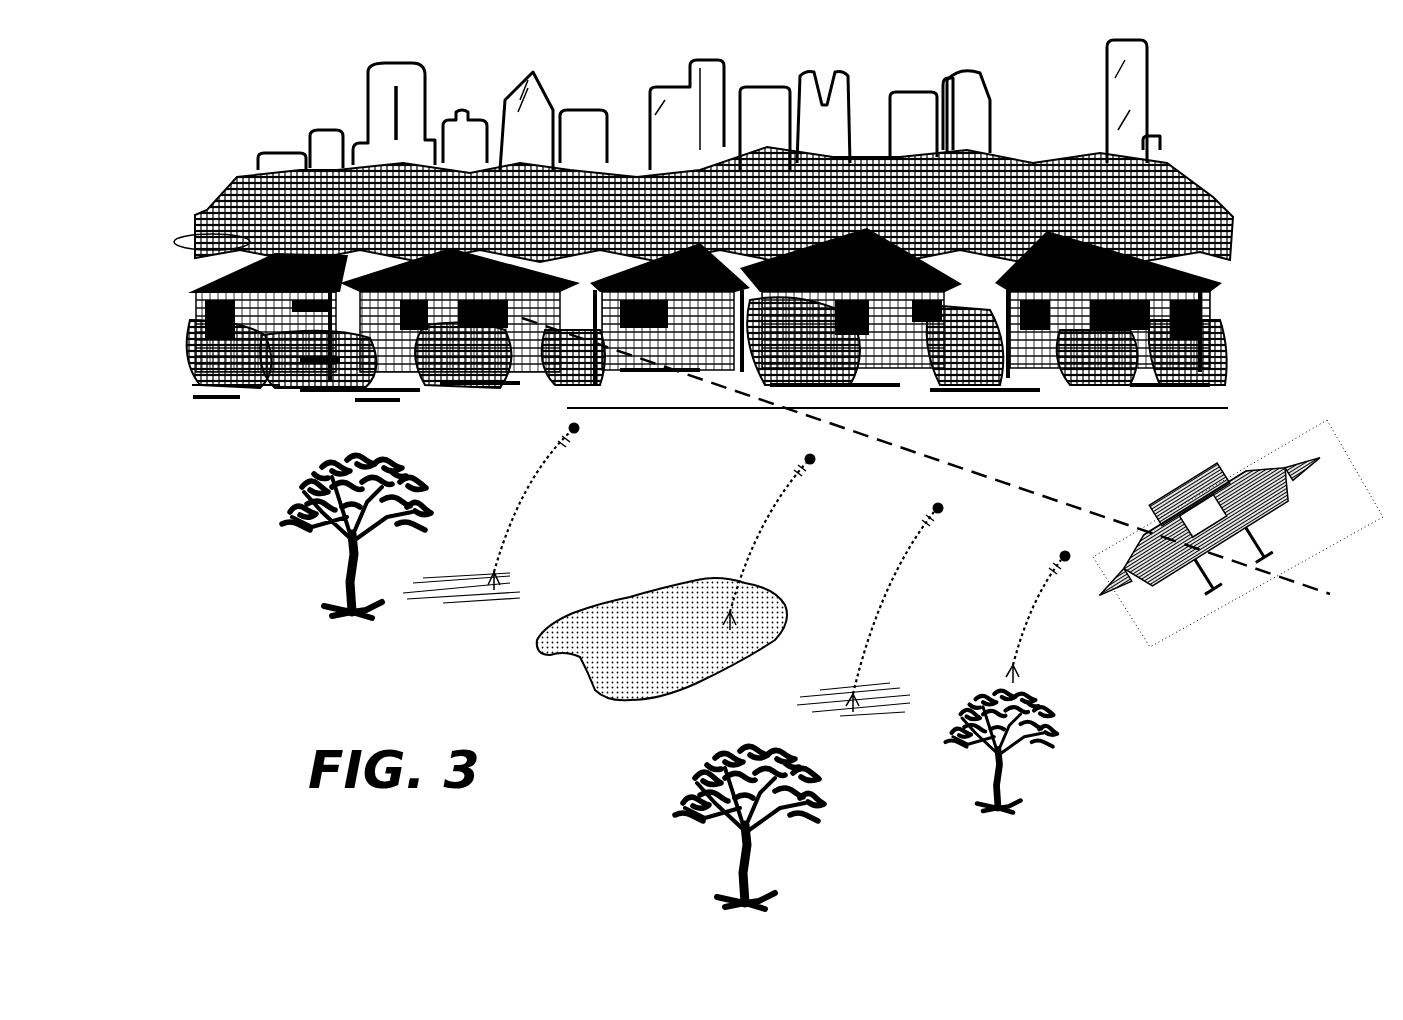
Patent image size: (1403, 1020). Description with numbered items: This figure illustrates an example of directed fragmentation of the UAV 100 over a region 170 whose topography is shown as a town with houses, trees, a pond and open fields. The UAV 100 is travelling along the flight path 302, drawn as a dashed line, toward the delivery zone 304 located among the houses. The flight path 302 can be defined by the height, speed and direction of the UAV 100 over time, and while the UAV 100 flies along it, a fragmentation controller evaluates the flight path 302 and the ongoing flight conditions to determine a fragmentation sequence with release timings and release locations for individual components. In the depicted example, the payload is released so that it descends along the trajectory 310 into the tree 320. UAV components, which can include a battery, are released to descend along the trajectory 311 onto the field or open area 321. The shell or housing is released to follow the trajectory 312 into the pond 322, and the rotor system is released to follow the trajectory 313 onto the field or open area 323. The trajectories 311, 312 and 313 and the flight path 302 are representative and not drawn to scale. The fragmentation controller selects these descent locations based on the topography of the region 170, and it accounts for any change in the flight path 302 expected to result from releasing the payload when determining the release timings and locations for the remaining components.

The region 170 is at (248, 78).
The delivery zone 304 is at (196, 252).
The flight path 302 is at (1078, 497).
The UAV 100 is at (1290, 500).
The trajectory 310 is at (1050, 592).
The trajectory 311 is at (916, 555).
The trajectory 312 is at (790, 500).
The trajectory 313 is at (552, 468).
The tree 320 is at (1005, 802).
The field or open area 321 is at (893, 714).
The pond 322 is at (680, 692).
The field or open area 323 is at (500, 603).